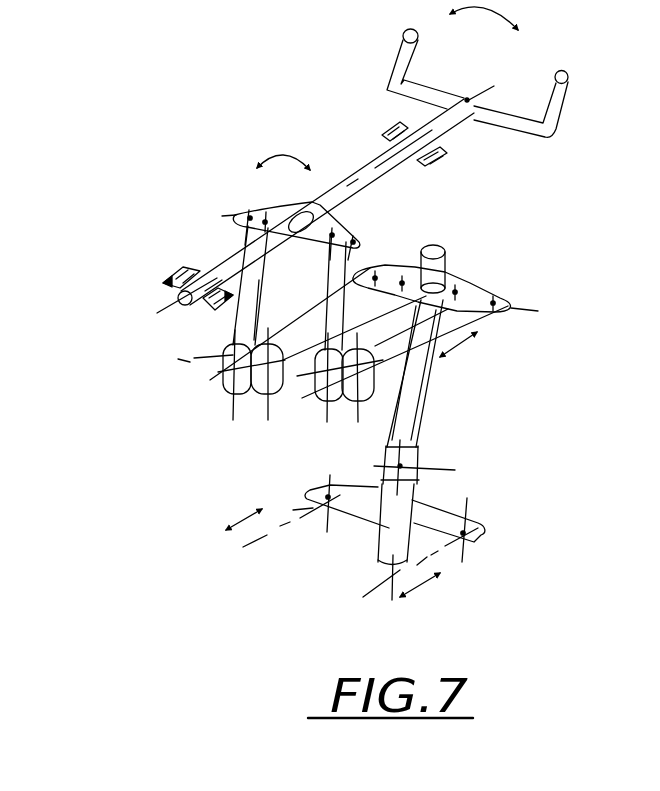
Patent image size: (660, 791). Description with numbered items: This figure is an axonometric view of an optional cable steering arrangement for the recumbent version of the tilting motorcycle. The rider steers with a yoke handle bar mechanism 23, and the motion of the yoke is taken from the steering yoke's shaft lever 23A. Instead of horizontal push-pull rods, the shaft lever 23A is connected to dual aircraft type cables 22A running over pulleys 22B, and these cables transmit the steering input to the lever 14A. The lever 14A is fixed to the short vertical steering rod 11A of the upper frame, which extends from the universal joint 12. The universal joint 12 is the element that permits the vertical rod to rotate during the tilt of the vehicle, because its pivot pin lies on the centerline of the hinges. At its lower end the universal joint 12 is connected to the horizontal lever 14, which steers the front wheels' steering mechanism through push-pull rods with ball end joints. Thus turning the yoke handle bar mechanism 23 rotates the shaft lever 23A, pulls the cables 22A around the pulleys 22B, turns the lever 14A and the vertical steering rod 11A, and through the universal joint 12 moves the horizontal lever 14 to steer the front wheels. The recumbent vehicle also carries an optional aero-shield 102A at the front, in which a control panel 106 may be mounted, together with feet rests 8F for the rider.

The yoke handle bar mechanism 23 is at (571, 89).
The shaft lever 23A is at (237, 215).
The aero-shield 102A is at (441, 154).
The control panel 106 is at (520, 180).
The feet rests 8F is at (187, 272).
The cables 22A is at (231, 327).
The pulleys 22B is at (268, 395).
The lever 14A is at (474, 286).
The vertical steering rod 11A is at (427, 397).
The universal joint 12 is at (421, 459).
The horizontal lever 14 is at (395, 535).